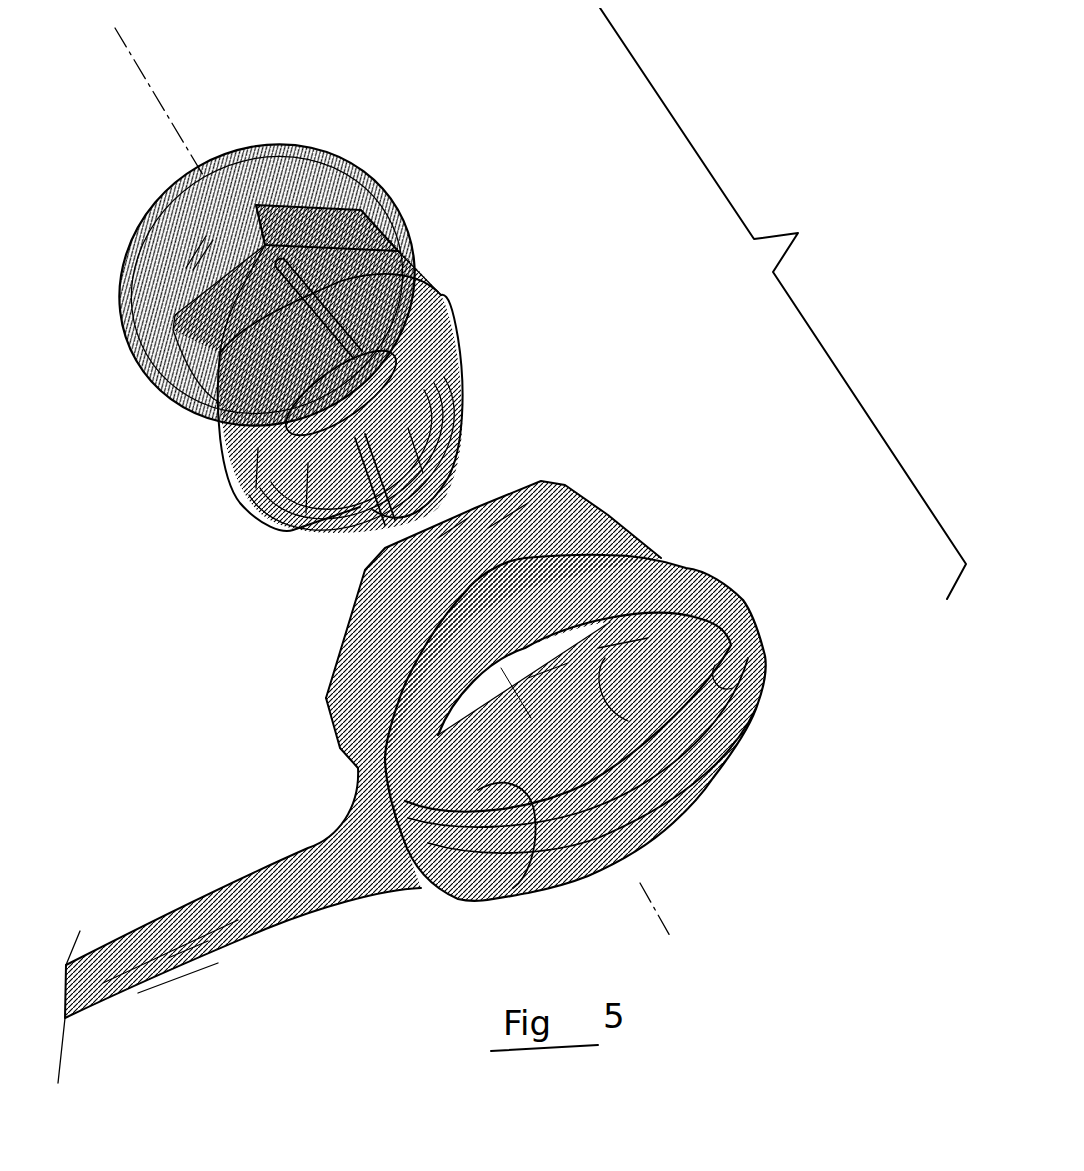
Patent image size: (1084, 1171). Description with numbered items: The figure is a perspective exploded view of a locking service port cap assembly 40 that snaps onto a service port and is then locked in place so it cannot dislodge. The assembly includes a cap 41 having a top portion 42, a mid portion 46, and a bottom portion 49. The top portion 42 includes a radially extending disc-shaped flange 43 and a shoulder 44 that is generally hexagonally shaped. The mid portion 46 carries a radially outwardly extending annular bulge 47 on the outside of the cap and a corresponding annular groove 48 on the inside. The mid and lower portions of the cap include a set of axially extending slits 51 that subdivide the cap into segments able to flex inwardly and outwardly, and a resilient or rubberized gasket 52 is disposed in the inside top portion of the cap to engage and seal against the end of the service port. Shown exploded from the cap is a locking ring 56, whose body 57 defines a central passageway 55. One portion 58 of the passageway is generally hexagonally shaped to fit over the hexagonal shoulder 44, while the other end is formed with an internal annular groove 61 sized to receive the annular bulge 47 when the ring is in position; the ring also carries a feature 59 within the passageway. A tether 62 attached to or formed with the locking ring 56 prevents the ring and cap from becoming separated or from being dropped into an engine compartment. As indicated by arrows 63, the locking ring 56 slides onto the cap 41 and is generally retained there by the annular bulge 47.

The locking service port cap assembly 40 is at (783, 303).
The cap 41 is at (325, 325).
The top portion 42 is at (233, 137).
The disc-shaped flange 43 is at (325, 178).
The shoulder 44 is at (207, 267).
The mid portion 46 is at (427, 283).
The annular bulge 47 is at (178, 407).
The annular groove 48 is at (450, 387).
The bottom portion 49 is at (293, 522).
The slits 51 is at (385, 255).
The gasket 52 is at (470, 360).
The central passageway 55 is at (650, 827).
The locking ring 56 is at (458, 744).
The body 57 is at (653, 540).
The hexagonally shaped portion of the passageway 58 is at (730, 725).
The groove 59 is at (735, 680).
The internal annular groove 61 is at (507, 890).
The tether 62 is at (205, 942).
The arrows 63 is at (252, 587).